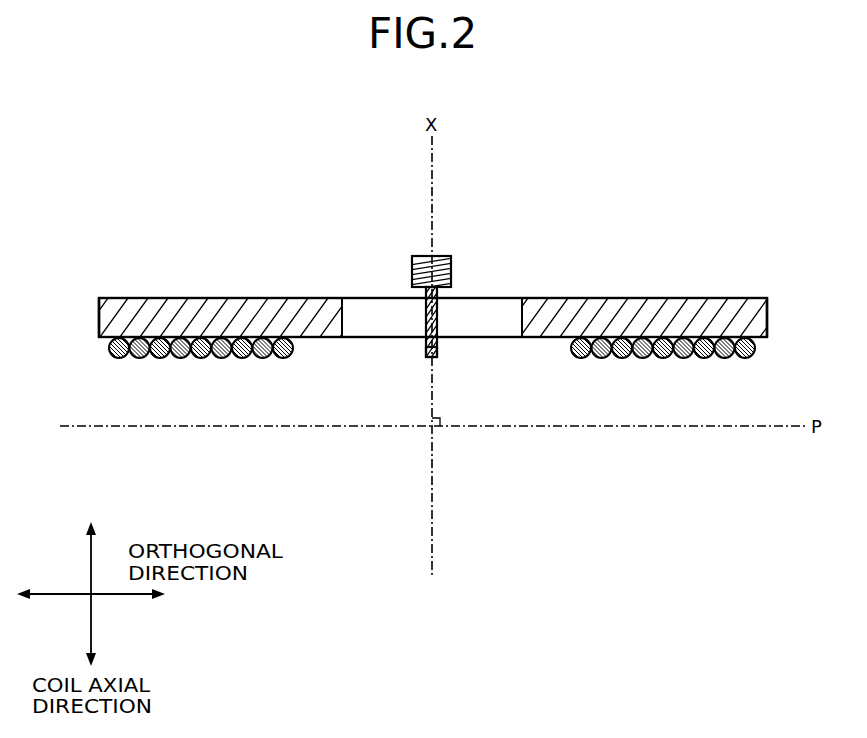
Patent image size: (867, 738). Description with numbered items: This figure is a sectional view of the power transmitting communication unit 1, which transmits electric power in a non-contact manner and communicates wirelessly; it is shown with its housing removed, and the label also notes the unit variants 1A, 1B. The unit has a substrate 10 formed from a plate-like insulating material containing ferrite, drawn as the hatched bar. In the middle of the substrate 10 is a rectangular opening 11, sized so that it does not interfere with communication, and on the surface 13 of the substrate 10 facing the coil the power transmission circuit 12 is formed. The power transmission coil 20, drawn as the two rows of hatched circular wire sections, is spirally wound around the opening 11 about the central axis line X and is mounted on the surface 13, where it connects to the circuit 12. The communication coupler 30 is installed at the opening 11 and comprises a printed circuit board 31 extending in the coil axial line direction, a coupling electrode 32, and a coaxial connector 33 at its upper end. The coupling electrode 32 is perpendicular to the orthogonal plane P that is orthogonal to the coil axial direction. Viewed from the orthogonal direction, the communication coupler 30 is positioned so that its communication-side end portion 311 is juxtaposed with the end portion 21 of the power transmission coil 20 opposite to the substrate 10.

The power transmitting communication unit 1 is at (433, 281).
The coil component (first) 1A is at (433, 281).
The coil component (second) 1B is at (622, 190).
The substrate 10 is at (92, 313).
The opening 11 is at (345, 338).
The power transmission circuit 12 is at (312, 338).
The surface 13 is at (104, 339).
The power transmission coil 20 is at (432, 370).
The end portion of the power transmission coil 21 is at (727, 359).
The communication coupler 30 is at (468, 220).
The printed circuit board 31 is at (471, 330).
The coupling electrode 32 is at (437, 318).
The coaxial connector 33 is at (421, 256).
The end portion on the communication side 311 is at (428, 359).